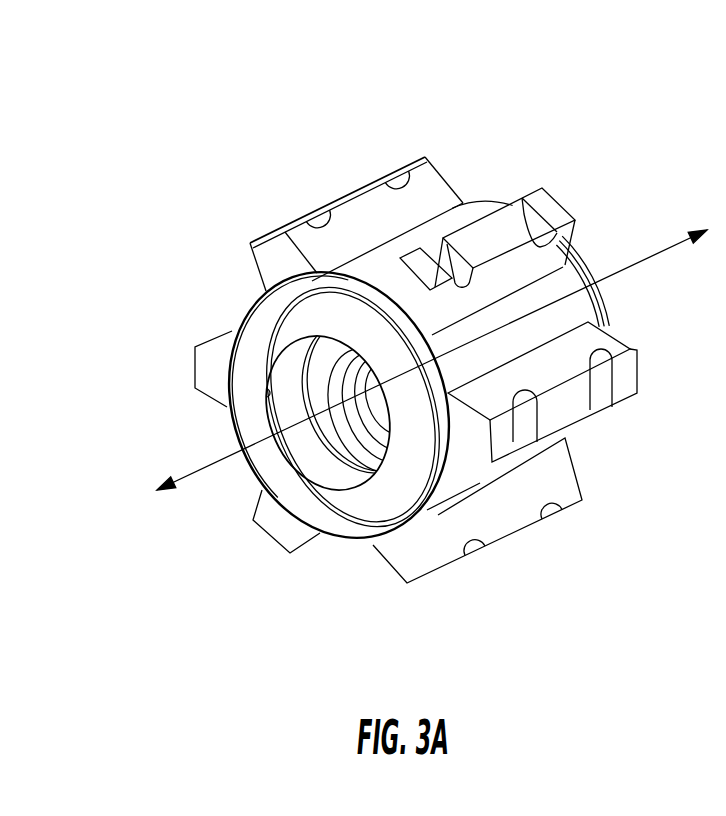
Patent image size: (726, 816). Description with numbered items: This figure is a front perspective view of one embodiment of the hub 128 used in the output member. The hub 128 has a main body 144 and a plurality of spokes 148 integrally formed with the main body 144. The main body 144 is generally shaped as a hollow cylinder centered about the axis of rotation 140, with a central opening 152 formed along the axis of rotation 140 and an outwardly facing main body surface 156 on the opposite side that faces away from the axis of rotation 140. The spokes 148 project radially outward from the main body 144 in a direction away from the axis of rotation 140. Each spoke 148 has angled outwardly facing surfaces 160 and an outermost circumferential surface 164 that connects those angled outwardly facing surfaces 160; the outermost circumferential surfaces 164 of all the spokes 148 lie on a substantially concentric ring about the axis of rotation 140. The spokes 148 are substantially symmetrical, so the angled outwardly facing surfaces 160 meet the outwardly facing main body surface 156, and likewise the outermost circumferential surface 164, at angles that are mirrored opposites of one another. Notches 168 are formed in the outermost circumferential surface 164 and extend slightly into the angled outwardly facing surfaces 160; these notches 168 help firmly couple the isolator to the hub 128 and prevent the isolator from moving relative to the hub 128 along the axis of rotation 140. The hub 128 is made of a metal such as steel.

The hub 128 is at (190, 261).
The axis of rotation 140 is at (168, 489).
The main body 144 is at (463, 213).
The spokes 148 is at (357, 203).
The central opening 152 is at (266, 396).
The outwardly facing main body surface 156 is at (516, 349).
The angled outwardly facing surfaces 160 is at (525, 286).
The outermost circumferential surface 164 is at (506, 251).
The notches 168 is at (445, 240).